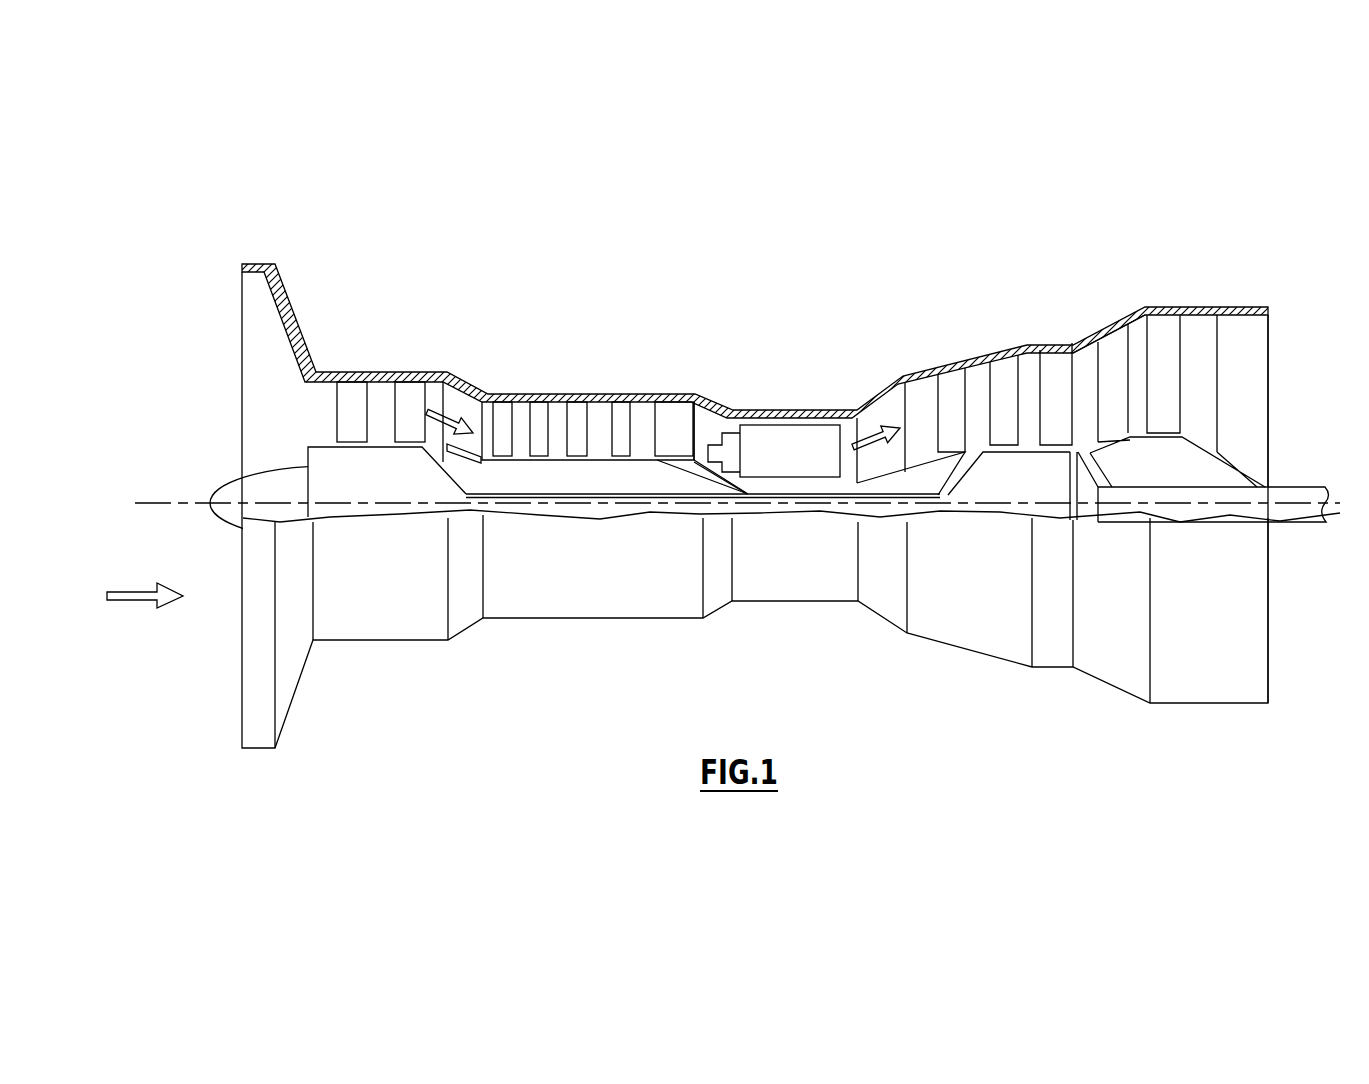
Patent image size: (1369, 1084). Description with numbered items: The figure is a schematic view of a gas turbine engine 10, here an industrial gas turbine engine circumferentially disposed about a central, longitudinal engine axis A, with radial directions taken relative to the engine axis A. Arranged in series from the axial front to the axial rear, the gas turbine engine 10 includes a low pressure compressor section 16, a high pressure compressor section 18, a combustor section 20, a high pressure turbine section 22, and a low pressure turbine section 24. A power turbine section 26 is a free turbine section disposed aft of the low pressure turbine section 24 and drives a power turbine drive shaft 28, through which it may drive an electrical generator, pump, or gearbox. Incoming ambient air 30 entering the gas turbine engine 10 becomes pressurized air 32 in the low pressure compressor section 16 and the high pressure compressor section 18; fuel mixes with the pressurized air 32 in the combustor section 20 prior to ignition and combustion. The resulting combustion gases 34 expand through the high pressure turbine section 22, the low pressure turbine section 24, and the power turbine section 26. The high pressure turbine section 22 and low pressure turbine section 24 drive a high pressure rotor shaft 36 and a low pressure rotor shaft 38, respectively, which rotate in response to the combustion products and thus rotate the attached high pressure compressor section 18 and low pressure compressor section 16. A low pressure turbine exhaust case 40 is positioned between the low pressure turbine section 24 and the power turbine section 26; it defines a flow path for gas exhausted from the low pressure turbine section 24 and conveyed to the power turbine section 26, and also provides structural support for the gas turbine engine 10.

The gas turbine engine 10 is at (791, 468).
The low pressure compressor section 16 is at (373, 349).
The high pressure compressor section 18 is at (610, 359).
The combustor section 20 is at (753, 393).
The high pressure turbine section 22 is at (958, 355).
The low pressure turbine section 24 is at (1065, 318).
The power turbine section 26 is at (1212, 291).
The power turbine drive shaft 28 is at (1286, 487).
The incoming ambient air 30 is at (140, 588).
The pressurized air 32 is at (452, 420).
The combustion gases 34 is at (867, 430).
The high pressure rotor shaft 36 is at (678, 470).
The low pressure rotor shaft 38 is at (458, 470).
The low pressure turbine exhaust case 40 is at (1088, 334).
The engine axis A is at (180, 503).